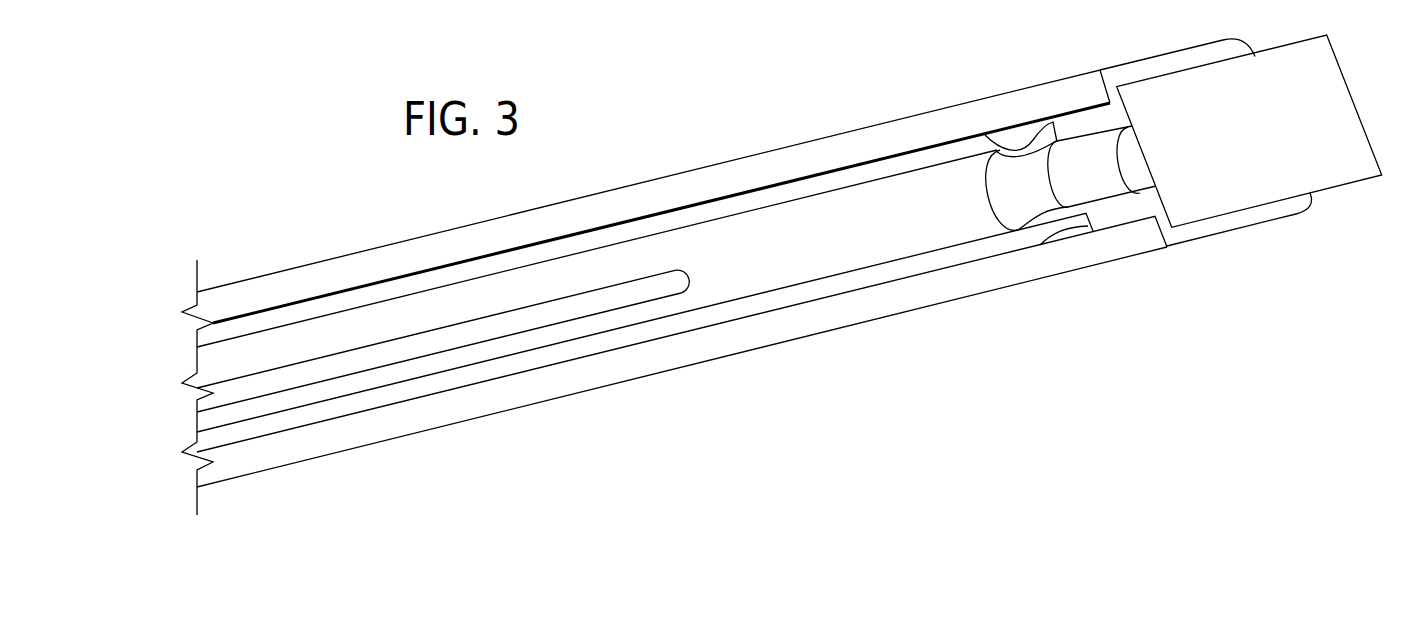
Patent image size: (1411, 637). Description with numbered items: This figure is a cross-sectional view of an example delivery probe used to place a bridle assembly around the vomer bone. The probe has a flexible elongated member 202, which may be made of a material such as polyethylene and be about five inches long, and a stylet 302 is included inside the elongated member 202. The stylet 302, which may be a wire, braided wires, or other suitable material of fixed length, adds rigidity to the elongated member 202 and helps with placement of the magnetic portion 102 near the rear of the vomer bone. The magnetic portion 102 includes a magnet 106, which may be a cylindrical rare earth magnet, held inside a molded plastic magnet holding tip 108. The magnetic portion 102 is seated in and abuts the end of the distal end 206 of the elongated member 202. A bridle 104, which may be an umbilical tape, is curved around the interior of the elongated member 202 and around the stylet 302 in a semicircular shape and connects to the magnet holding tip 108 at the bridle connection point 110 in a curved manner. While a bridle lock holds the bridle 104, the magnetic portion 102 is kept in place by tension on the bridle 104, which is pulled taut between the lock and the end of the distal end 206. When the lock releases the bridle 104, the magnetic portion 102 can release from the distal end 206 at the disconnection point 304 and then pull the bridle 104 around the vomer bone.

The magnetic portion 102 is at (1318, 265).
The bridle 104 is at (703, 317).
The magnet 106 is at (1332, 92).
The magnet holding tip 108 is at (1220, 227).
The bridle connection point 110 is at (1092, 244).
The elongated member 202 is at (555, 400).
The distal end 206 is at (413, 209).
The stylet 302 is at (636, 287).
The disconnection point 304 is at (1099, 68).